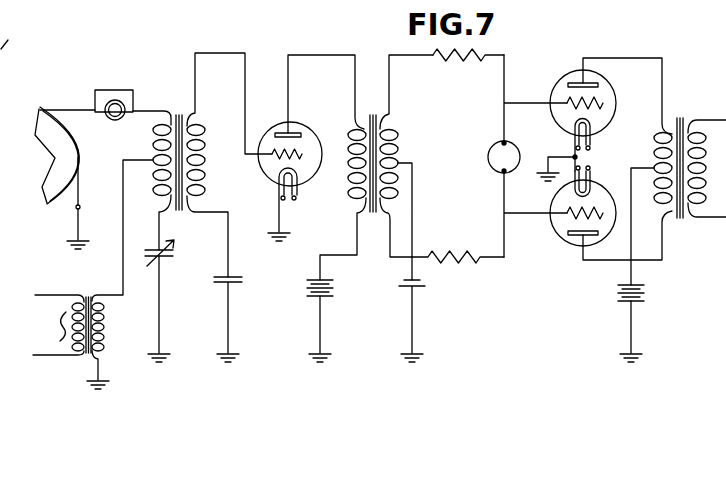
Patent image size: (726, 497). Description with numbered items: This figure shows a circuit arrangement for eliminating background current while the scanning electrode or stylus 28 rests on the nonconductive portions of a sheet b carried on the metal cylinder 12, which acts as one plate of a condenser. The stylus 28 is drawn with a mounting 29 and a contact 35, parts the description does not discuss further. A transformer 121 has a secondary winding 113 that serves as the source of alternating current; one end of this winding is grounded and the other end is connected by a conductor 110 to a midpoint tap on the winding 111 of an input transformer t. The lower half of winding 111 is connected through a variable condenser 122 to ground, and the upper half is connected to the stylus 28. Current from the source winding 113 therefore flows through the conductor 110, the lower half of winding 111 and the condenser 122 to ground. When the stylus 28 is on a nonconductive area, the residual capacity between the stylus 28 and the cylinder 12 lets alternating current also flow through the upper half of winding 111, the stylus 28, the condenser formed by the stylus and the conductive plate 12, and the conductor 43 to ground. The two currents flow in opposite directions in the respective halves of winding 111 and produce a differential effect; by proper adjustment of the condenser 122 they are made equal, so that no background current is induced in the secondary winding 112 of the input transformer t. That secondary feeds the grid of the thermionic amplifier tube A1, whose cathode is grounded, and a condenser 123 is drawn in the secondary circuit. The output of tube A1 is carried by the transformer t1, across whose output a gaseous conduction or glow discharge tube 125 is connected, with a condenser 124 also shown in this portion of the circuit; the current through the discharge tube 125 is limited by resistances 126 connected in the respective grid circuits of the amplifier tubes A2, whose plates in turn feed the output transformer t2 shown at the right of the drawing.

The cylinder 12 is at (62, 148).
The sheet b is at (68, 117).
The stylus 28 is at (76, 109).
The contact block 29 is at (108, 95).
The terminal 35 is at (118, 114).
The conductor 43 is at (80, 175).
The input transformer t is at (184, 113).
The primary winding 111 is at (153, 176).
The secondary winding 112 is at (204, 146).
The conductor 110 is at (123, 247).
The transformer 121 is at (90, 297).
The secondary winding 113 is at (104, 321).
The variable condenser 122 is at (175, 242).
The condenser 123 is at (240, 283).
The thermionic amplifier tube A1 is at (305, 129).
The transformer t1 is at (385, 115).
The resistances 126 is at (463, 62).
The glow discharge tube 125 is at (489, 149).
The condenser 124 is at (420, 287).
The amplifier tubes A2 is at (616, 100).
The output transformer t2 is at (690, 156).